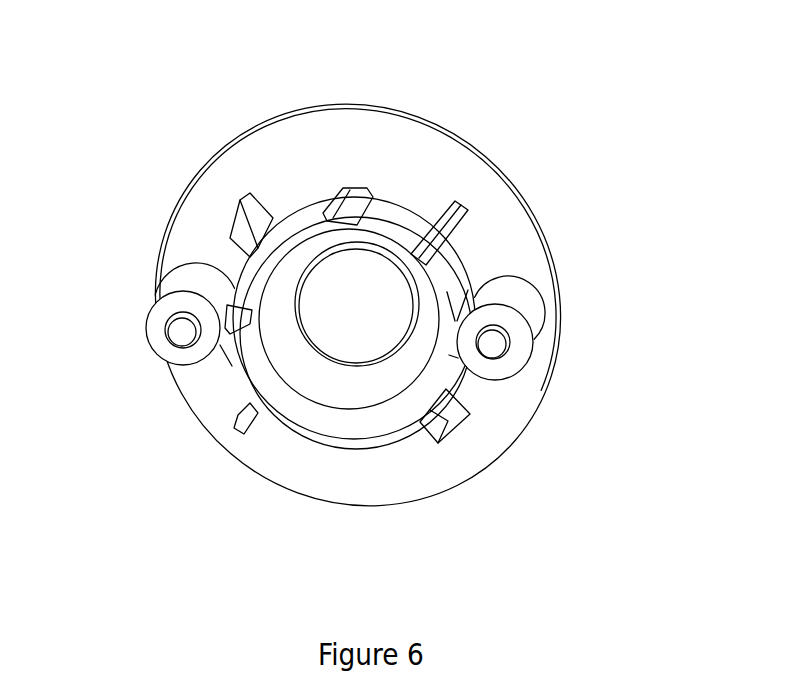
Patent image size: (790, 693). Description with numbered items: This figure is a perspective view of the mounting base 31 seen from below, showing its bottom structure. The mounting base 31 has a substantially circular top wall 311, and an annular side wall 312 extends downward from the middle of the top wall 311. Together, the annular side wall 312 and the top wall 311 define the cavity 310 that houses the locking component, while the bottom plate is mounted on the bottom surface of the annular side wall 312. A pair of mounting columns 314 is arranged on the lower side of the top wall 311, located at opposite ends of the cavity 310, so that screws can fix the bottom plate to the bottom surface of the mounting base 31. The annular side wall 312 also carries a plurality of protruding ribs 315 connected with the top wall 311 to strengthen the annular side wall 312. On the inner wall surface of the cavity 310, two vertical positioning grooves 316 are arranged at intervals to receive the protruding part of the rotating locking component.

The mounting base 31 is at (370, 30).
The cavity 310 is at (363, 393).
The top wall 311 is at (207, 400).
The annular side wall 312 is at (315, 438).
The mounting columns 314 is at (513, 333).
The protruding ribs 315 is at (450, 415).
The positioning grooves 316 is at (328, 227).